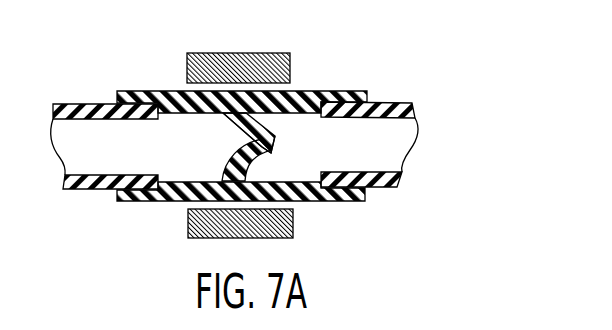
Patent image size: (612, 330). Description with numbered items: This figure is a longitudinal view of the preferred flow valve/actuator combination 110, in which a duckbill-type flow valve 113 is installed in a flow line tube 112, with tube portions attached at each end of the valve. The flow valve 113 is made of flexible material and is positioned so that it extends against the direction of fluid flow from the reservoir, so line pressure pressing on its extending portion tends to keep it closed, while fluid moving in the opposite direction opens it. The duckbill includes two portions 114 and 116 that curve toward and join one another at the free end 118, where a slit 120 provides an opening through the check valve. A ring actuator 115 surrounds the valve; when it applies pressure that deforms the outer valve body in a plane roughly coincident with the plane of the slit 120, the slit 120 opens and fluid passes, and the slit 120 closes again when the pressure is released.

The flow valve/actuator combination 110 is at (389, 33).
The flow line tube 112 is at (78, 103).
The flow valve 113 is at (334, 199).
The first portion of the duckbill valve 114 is at (257, 124).
The ring actuator 115 is at (231, 53).
The second portion of the duckbill valve 116 is at (260, 160).
The free end of the valve 118 is at (275, 143).
The slit 120 is at (250, 141).